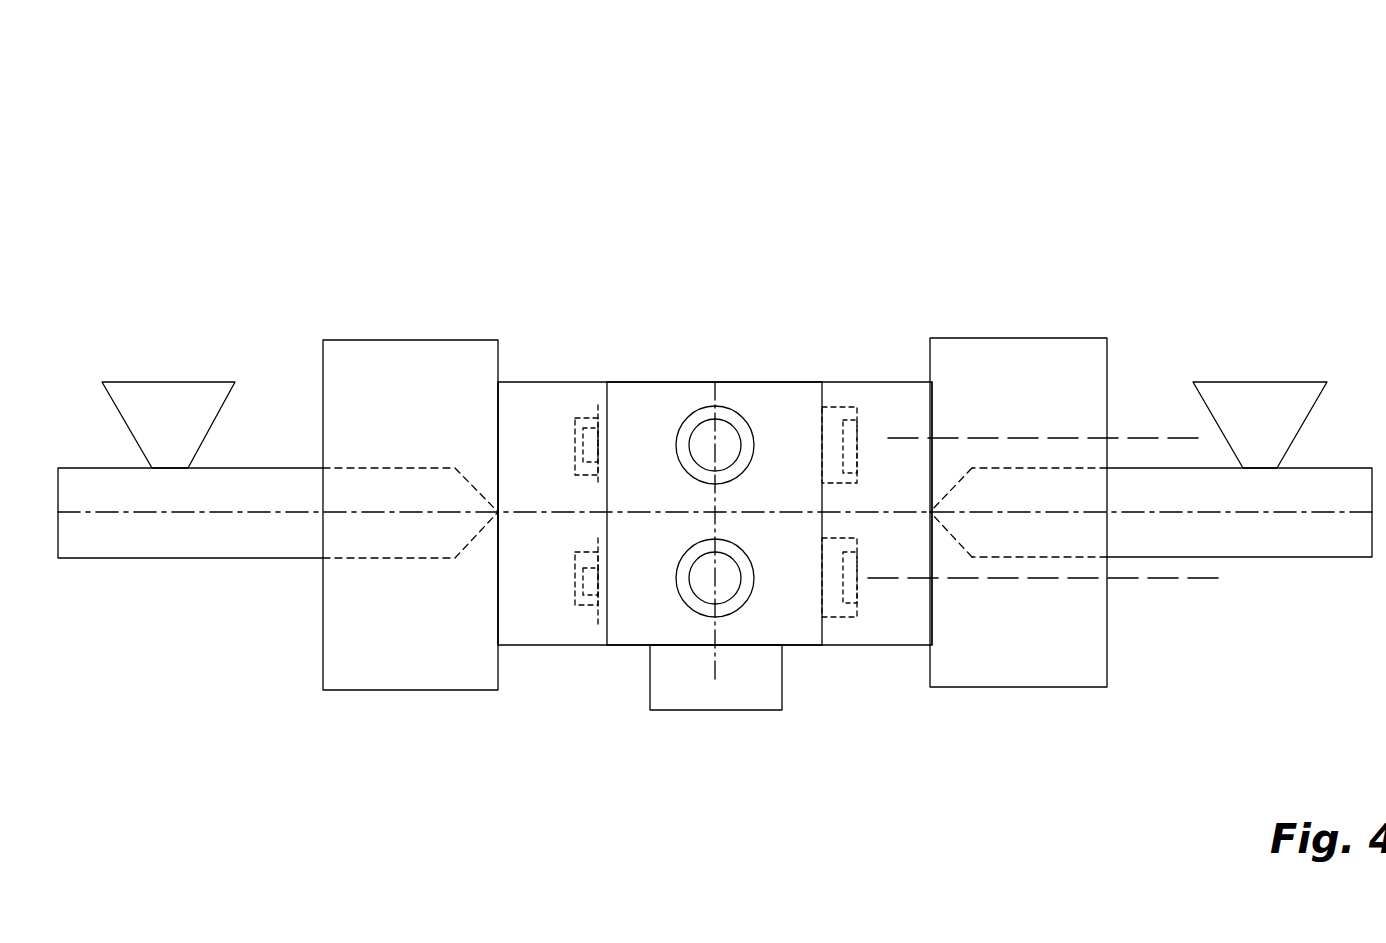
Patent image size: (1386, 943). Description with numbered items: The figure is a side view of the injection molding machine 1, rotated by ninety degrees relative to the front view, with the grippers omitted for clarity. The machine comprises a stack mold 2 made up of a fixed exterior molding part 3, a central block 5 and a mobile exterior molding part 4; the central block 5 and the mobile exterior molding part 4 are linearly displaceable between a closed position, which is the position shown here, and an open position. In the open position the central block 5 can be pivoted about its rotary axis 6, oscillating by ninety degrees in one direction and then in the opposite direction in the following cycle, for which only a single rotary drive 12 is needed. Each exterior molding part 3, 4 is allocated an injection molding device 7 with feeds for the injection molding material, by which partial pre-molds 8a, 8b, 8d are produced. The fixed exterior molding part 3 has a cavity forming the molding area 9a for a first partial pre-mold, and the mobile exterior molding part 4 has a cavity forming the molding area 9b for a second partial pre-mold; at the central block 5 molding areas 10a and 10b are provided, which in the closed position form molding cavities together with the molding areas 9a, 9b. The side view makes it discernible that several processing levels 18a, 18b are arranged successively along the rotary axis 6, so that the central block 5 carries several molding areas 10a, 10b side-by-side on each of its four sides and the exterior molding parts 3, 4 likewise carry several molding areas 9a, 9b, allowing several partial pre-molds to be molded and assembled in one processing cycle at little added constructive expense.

The injection molding machine 1 is at (1215, 134).
The stack mold 2 is at (524, 228).
The fixed exterior molding part 3 is at (893, 397).
The mobile exterior molding part 4 is at (522, 397).
The central block 5 is at (660, 397).
The rotary axis 6 is at (717, 692).
The injection molding device 7 is at (260, 377).
The partial pre-mold 8a is at (840, 403).
The partial pre-mold 8b is at (604, 423).
The partial pre-mold 8d is at (736, 421).
The molding area 9a is at (855, 565).
The molding area 9b is at (598, 592).
The molding area 10a is at (832, 580).
The molding area 10b is at (602, 590).
The rotary drive 12 is at (662, 683).
The processing level 18a is at (1183, 578).
The processing level 18b is at (1118, 438).